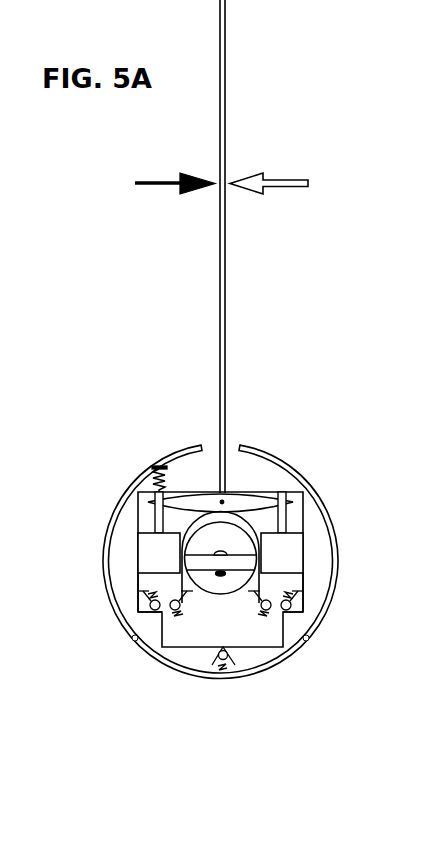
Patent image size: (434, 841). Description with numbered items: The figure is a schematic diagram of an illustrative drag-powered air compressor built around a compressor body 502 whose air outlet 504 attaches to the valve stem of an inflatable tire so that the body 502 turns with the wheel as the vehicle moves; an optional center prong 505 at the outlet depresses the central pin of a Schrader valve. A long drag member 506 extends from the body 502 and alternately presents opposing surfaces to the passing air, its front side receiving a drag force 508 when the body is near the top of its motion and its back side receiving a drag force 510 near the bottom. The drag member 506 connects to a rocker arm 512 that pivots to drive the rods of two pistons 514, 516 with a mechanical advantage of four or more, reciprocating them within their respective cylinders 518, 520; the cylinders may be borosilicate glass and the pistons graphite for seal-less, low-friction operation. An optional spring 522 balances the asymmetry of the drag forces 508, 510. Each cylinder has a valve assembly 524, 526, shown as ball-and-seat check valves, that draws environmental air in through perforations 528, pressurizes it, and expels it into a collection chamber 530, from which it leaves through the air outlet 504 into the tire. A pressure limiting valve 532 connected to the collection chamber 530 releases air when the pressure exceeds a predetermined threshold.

The compressor body 502 is at (262, 452).
The air outlet 504 is at (237, 592).
The center prong 505 is at (220, 553).
The drag member 506 is at (227, 67).
The drag force 508 is at (172, 171).
The drag force 510 is at (270, 171).
The rocker arm 512 is at (263, 492).
The piston 514 is at (297, 555).
The piston 516 is at (140, 541).
The cylinder 518 is at (297, 583).
The cylinder 520 is at (145, 585).
The spring 522 is at (152, 476).
The valve assembly 524 is at (287, 612).
The valve assembly 526 is at (172, 613).
The perforations 528 is at (134, 640).
The collection chamber 530 is at (239, 632).
The pressure limiting valve 532 is at (217, 673).